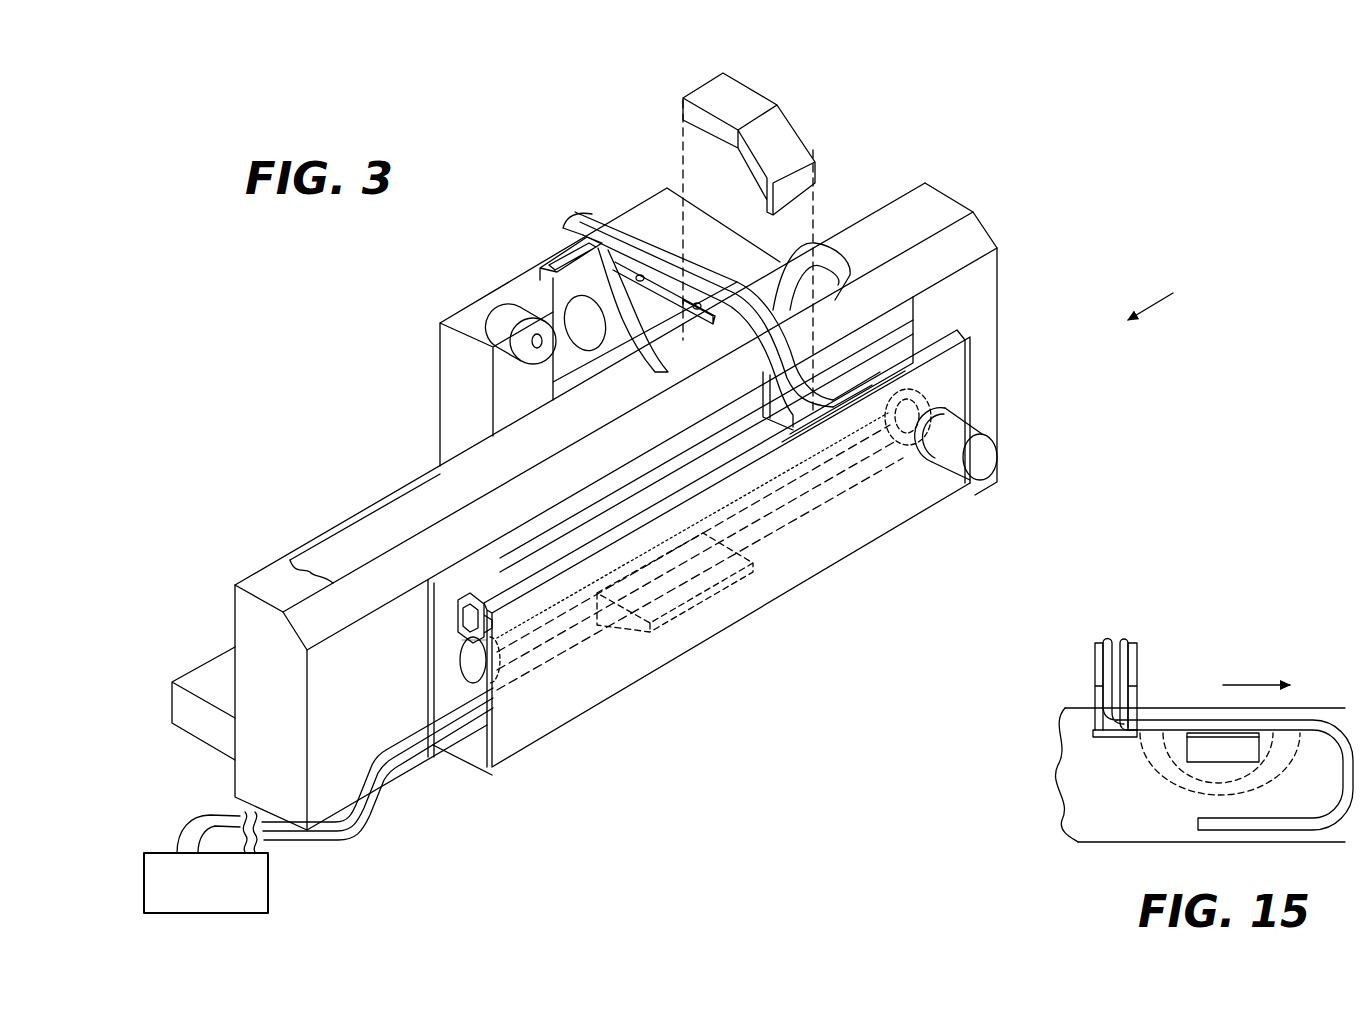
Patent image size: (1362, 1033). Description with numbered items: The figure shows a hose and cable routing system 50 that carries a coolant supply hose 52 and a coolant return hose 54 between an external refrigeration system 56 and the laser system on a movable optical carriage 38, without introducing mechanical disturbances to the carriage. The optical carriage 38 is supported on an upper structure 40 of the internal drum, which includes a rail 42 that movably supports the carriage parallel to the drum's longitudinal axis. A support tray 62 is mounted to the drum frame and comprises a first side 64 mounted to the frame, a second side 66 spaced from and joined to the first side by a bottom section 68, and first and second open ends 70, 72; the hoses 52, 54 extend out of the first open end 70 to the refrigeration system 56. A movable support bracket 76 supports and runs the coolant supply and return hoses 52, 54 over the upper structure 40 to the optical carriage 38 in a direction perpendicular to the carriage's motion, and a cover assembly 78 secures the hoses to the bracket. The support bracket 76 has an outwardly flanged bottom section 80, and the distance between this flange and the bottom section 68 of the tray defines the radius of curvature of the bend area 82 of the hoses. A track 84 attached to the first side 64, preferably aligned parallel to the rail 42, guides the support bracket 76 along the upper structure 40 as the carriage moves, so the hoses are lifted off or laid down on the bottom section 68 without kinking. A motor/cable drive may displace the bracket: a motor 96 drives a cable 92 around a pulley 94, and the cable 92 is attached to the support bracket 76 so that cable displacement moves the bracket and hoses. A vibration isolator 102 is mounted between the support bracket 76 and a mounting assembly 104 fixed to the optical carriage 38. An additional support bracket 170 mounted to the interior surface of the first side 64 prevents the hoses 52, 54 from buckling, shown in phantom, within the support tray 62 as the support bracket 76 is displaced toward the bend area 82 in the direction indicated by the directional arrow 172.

In FIG. 3, the optical carriage 38 is at (458, 317).
In FIG. 3, the upper structure 40 is at (250, 623).
In FIG. 3, the rail 42 is at (208, 682).
In FIG. 3, the hose and cable routing system 50 is at (1166, 297).
In FIG. 3, the coolant supply hose 52 is at (360, 787).
In FIG. 15, the coolant supply hose 52 is at (1108, 638).
In FIG. 3, the coolant return hose 54 is at (393, 768).
In FIG. 15, the coolant return hose 54 is at (1124, 638).
In FIG. 3, the refrigeration system 56 is at (257, 900).
In FIG. 3, the support tray 62 is at (918, 532).
In FIG. 15, the support tray 62 is at (1117, 845).
In FIG. 3, the first side 64 is at (913, 323).
In FIG. 3, the second side 66 is at (970, 408).
In FIG. 3, the bottom section 68 is at (463, 753).
In FIG. 3, the first open end 70 is at (452, 660).
In FIG. 3, the second open end 72 is at (922, 342).
In FIG. 3, the support bracket 76 is at (760, 365).
In FIG. 15, the support bracket 76 is at (1132, 672).
In FIG. 3, the cover assembly 78 is at (803, 178).
In FIG. 3, the outwardly flanged bottom section 80 is at (787, 425).
In FIG. 15, the outwardly flanged bottom section 80 is at (1097, 735).
In FIG. 3, the bend area 82 is at (916, 384).
In FIG. 3, the track 84 is at (473, 619).
In FIG. 3, the cable 92 is at (553, 605).
In FIG. 3, the pulley 94 is at (468, 653).
In FIG. 3, the motor 96 is at (983, 455).
In FIG. 3, the vibration isolator 102 is at (655, 275).
In FIG. 3, the mounting assembly 104 is at (630, 280).
In FIG. 3, the support bracket 170 is at (690, 553).
In FIG. 15, the support bracket 170 is at (1193, 752).
In FIG. 15, the directional arrow 172 is at (1252, 682).